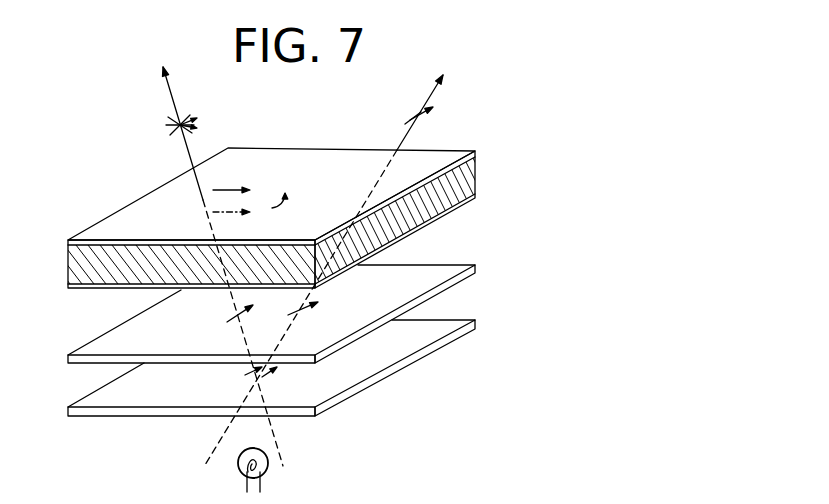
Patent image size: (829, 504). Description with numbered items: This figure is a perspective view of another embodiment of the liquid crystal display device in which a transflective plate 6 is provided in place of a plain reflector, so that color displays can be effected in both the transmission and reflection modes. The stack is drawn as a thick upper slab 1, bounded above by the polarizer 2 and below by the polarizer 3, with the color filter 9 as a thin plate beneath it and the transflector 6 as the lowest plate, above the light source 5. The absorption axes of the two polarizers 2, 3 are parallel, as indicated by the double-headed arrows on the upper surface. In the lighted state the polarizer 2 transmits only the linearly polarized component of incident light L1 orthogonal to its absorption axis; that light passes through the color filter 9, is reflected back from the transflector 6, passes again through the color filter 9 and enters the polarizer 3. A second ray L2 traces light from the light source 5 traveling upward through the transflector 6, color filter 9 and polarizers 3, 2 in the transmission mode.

The light guide plate 1 is at (475, 166).
The polarizer 2 is at (475, 150).
The polarizer 3 is at (475, 197).
The light source 5 is at (238, 466).
The transflective plate 6 is at (478, 320).
The color filter 9 is at (475, 265).
The incident light L1 is at (215, 255).
The light ray L2 is at (330, 255).